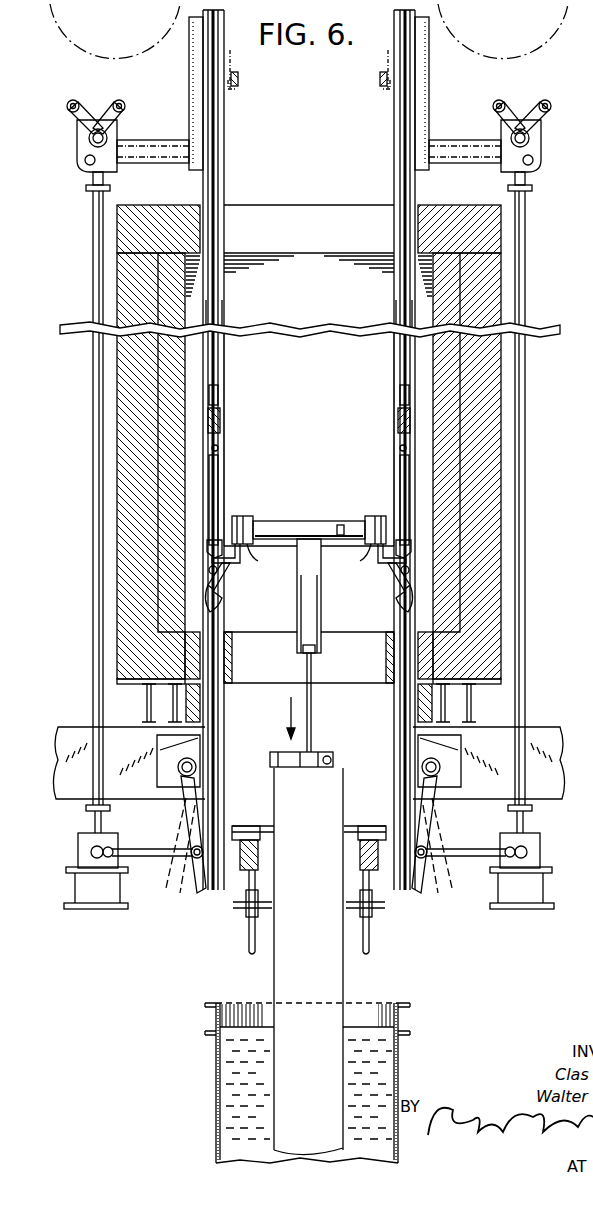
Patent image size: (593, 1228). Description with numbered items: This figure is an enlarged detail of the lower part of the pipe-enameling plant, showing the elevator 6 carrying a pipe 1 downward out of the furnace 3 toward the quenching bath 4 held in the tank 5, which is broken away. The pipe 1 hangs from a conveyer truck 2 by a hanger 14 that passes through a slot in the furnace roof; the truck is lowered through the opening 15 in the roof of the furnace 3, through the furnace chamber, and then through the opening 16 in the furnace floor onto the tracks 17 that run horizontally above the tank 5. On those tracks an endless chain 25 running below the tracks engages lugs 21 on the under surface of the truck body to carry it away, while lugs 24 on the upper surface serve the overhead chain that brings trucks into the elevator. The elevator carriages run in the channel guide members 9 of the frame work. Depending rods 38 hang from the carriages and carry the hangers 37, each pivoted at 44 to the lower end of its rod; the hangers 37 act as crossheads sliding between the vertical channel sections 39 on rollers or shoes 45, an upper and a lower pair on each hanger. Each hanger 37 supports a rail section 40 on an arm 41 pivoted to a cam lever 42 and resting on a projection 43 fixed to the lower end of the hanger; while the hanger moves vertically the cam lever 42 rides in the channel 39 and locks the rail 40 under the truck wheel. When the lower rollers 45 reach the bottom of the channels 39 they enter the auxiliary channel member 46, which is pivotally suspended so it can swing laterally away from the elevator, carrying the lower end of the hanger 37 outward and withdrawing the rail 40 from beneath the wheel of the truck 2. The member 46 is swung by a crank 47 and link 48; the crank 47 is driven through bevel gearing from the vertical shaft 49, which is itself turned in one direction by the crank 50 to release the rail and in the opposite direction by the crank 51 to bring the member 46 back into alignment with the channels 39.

The pipe 1 is at (276, 975).
The conveyer truck 2 is at (307, 521).
The furnace 3 is at (117, 387).
The quenching bath 4 is at (358, 1028).
The tank 5 is at (217, 1066).
The elevator 6 is at (378, 379).
The channel guide member 9 is at (190, 89).
The hanger 14 is at (306, 670).
The opening 15 is at (330, 216).
The opening 16 is at (330, 655).
The tracks 17 is at (243, 874).
The lug 21 is at (255, 548).
The lug 24 is at (259, 521).
The endless chain 25 is at (262, 855).
The hanger 37 is at (215, 488).
The depending rod 38 is at (218, 302).
The vertical channel section 39 is at (228, 667).
The rail section 40 is at (243, 561).
The arm 41 is at (218, 552).
The cam lever 42 is at (216, 606).
The projection 43 is at (235, 572).
The pivot 44 is at (221, 448).
The roller or shoe 45 is at (222, 428).
The auxiliary channel member 46 is at (220, 814).
The crank 47 is at (108, 850).
The link 48 is at (309, 888).
The vertical shaft 49 is at (93, 574).
The crank 50 is at (121, 117).
The crank 51 is at (72, 114).